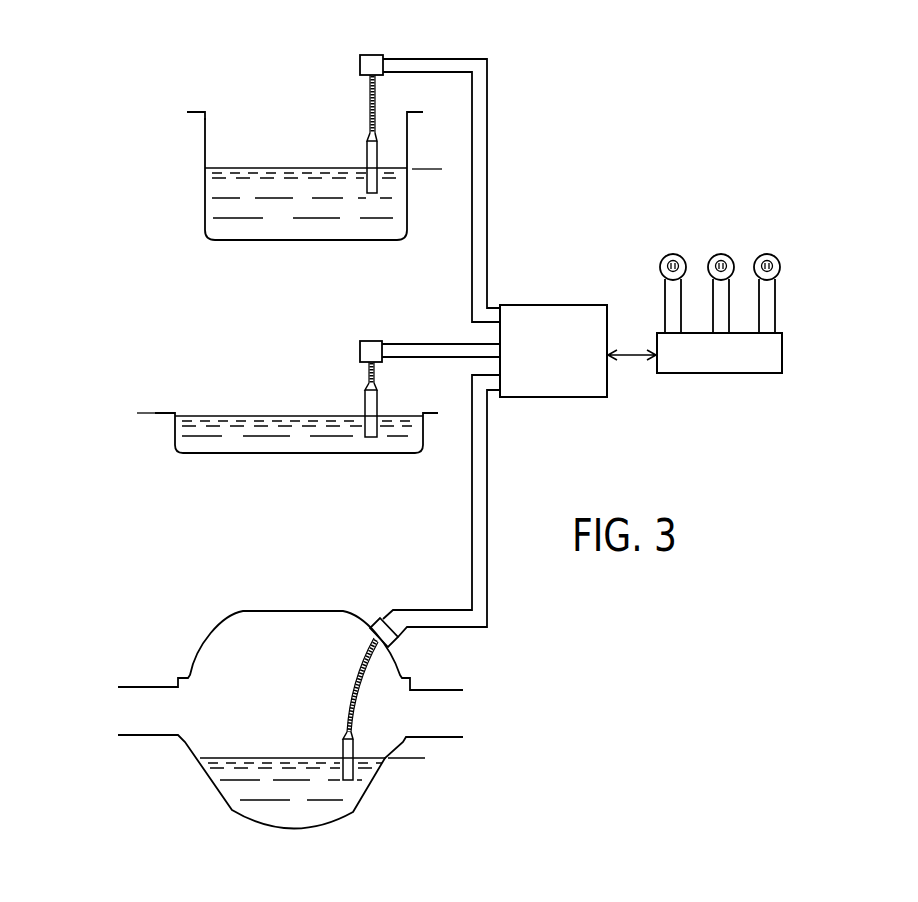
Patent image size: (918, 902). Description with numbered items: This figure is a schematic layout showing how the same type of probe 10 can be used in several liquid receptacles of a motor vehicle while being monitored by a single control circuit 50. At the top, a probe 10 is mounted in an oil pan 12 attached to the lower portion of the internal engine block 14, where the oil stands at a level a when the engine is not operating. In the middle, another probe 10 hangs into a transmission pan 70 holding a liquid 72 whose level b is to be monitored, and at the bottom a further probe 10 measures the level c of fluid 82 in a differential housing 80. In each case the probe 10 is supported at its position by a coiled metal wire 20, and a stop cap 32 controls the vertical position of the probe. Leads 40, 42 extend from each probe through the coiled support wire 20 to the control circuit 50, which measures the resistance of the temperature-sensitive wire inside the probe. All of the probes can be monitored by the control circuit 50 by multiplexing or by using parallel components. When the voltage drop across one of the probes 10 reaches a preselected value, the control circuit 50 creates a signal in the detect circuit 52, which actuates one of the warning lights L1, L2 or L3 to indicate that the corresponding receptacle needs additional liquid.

The probe 10 is at (381, 151).
The oil pan 12 is at (407, 228).
The internal engine block 14 is at (188, 113).
The coiled metal wire 20 is at (368, 105).
The stop cap 32 is at (373, 55).
The lead 40 is at (432, 59).
The lead 42 is at (446, 72).
The control circuit 50 is at (550, 306).
The detect circuit 52 is at (768, 374).
The transmission pan 70 is at (391, 455).
The liquid 72 is at (297, 441).
The differential housing 80 is at (333, 826).
The fluid 82 is at (281, 812).
The warning light L1 is at (673, 280).
The warning light L2 is at (720, 280).
The warning light L3 is at (767, 280).
The level a is at (435, 168).
The level b is at (137, 412).
The level c is at (414, 761).